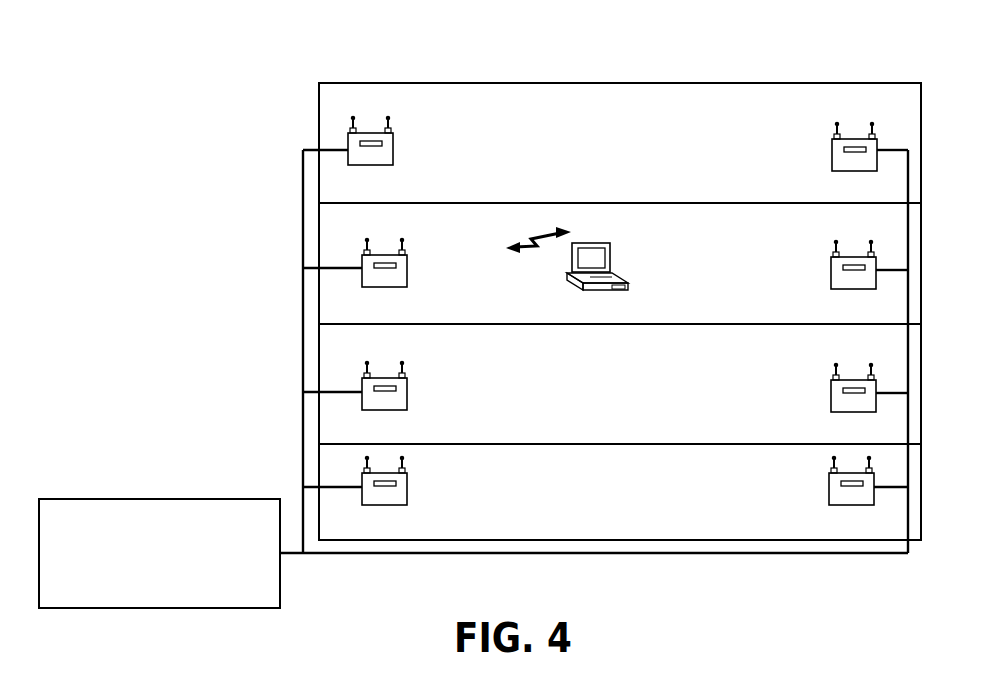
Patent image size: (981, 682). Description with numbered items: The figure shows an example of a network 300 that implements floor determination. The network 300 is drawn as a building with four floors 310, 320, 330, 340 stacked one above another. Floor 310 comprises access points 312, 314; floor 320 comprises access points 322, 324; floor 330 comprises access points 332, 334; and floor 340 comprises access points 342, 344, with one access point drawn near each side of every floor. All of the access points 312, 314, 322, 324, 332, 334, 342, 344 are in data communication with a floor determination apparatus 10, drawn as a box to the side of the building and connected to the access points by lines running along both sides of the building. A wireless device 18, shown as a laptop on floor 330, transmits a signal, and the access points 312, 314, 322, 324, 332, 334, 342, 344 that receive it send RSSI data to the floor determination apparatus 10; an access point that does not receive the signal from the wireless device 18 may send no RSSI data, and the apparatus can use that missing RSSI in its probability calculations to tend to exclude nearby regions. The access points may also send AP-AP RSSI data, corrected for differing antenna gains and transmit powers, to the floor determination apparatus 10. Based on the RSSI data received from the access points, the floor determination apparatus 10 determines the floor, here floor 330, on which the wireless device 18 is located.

The network 300 is at (254, 75).
The floor determination apparatus 10 is at (142, 597).
The wireless device 18 is at (618, 282).
The floor 310 is at (580, 527).
The floor 320 is at (580, 428).
The floor 330 is at (663, 324).
The floor 340 is at (580, 187).
The access point 312 is at (407, 487).
The access point 314 is at (829, 487).
The access point 322 is at (407, 392).
The access point 324 is at (831, 392).
The access point 332 is at (407, 268).
The access point 334 is at (831, 268).
The access point 342 is at (393, 150).
The access point 344 is at (832, 150).